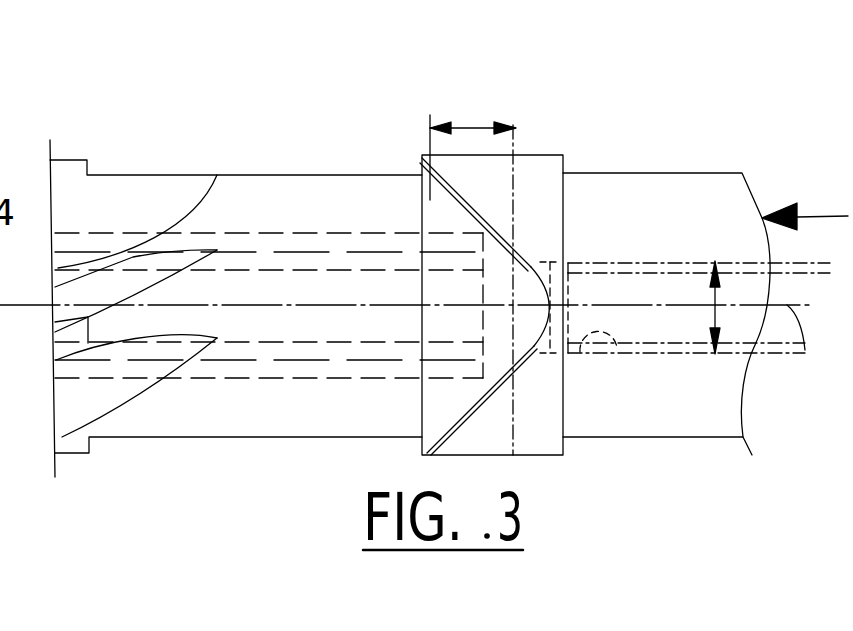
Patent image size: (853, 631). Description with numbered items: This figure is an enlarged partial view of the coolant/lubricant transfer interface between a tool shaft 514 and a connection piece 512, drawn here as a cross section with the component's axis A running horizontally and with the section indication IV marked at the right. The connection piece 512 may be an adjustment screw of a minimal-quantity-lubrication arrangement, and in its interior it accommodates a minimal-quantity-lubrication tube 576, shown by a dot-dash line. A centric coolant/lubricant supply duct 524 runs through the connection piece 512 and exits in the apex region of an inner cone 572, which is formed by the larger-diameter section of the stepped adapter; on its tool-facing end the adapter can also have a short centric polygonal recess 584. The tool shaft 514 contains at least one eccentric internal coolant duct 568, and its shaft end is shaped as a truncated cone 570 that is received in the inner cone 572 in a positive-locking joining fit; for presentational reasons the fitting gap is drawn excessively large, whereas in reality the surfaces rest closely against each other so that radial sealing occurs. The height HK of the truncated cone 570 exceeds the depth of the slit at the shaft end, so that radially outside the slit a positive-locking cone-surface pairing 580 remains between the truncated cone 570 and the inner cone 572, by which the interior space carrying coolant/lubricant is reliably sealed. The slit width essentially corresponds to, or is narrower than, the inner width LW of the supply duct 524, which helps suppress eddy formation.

The connection piece 512 is at (628, 215).
The tool shaft 514 is at (286, 203).
The coolant/lubricant supply duct 524 is at (617, 350).
The coolant duct 568 is at (296, 372).
The truncated cone 570 is at (450, 398).
The inner cone 572 is at (508, 250).
The minimal-quantity-lubrication tube 576 is at (697, 347).
The cone-surface pairing 580 is at (485, 390).
The polygonal recess 584 is at (549, 292).
The height of the truncated cone HK is at (466, 128).
The inner width LW is at (715, 317).
The section IV arrow IV is at (753, 141).
The axis line A is at (805, 350).